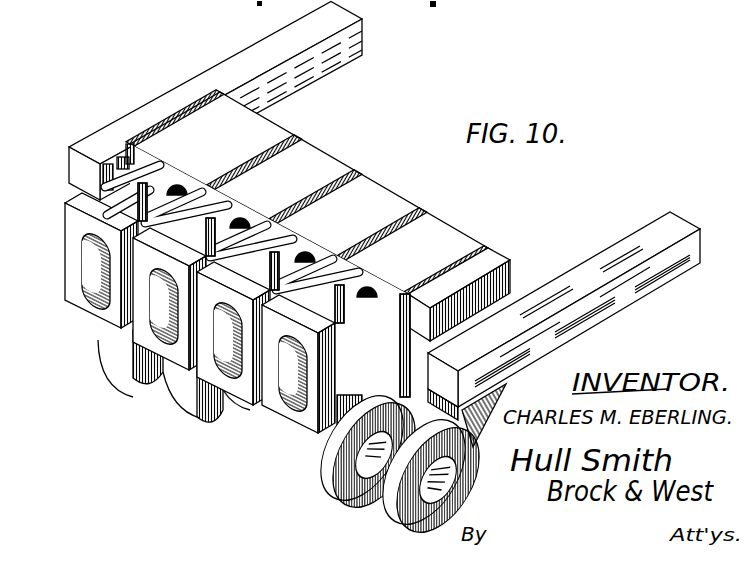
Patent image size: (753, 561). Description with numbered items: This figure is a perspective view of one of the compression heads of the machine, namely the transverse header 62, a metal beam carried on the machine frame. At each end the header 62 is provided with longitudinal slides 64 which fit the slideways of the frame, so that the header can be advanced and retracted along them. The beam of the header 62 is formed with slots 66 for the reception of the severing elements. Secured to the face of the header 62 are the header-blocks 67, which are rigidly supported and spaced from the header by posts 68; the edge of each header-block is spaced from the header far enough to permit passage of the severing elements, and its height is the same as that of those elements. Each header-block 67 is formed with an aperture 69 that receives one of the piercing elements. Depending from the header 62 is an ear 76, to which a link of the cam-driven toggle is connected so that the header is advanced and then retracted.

The transverse header 62 is at (309, 193).
The longitudinal slides 64 is at (218, 63).
The slots 66 is at (224, 95).
The header-blocks 67 is at (134, 338).
The posts 68 is at (288, 222).
The aperture 69 is at (92, 258).
The ear 76 is at (134, 370).